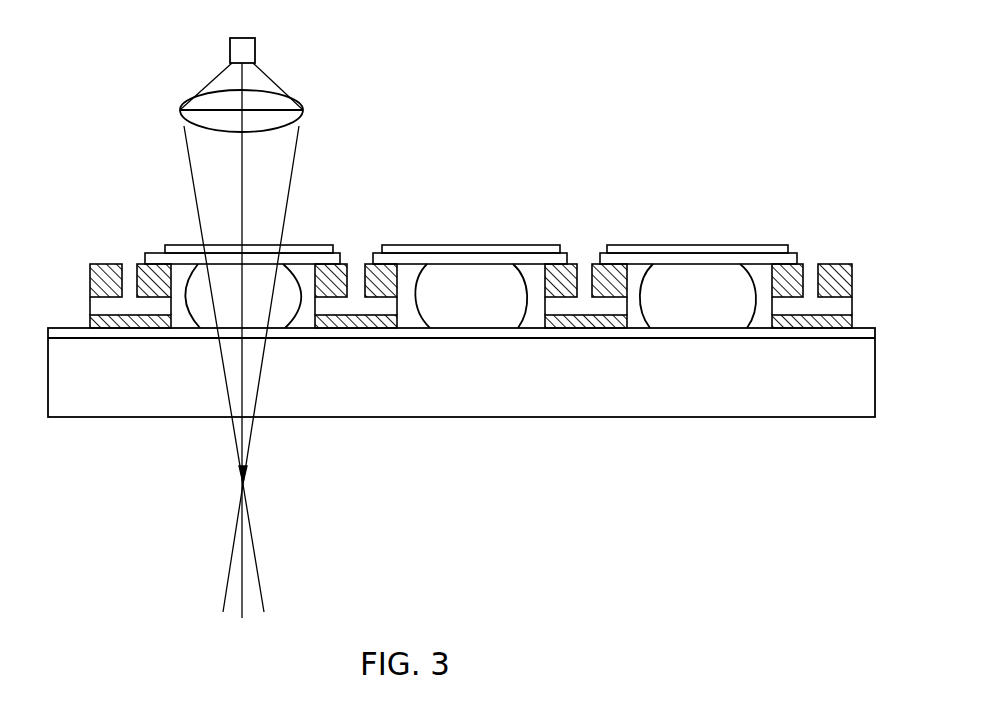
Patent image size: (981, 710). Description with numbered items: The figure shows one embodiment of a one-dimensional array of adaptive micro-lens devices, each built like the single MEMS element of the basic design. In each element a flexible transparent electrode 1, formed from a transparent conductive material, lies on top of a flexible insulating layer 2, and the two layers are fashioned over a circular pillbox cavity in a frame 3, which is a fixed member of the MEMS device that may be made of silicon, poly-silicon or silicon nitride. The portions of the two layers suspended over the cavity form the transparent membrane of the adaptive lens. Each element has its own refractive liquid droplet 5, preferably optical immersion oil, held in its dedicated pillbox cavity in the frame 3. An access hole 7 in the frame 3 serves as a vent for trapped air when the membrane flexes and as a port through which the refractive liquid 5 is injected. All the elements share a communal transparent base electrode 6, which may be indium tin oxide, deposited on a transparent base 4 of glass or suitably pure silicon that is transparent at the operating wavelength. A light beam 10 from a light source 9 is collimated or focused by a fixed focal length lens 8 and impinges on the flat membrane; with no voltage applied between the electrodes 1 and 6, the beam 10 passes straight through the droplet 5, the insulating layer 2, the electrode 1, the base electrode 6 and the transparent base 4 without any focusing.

The flexible transparent electrode 1 is at (310, 247).
The flexible insulating layer 2 is at (173, 258).
The frame 3 is at (89, 264).
The transparent base 4 is at (528, 362).
The refractive liquid droplet 5 is at (288, 295).
The transparent base electrode 6 is at (73, 333).
The access hole 7 is at (352, 302).
The fixed focal length lens 8 is at (306, 108).
The light source 9 is at (258, 51).
The light beam 10 is at (163, 339).